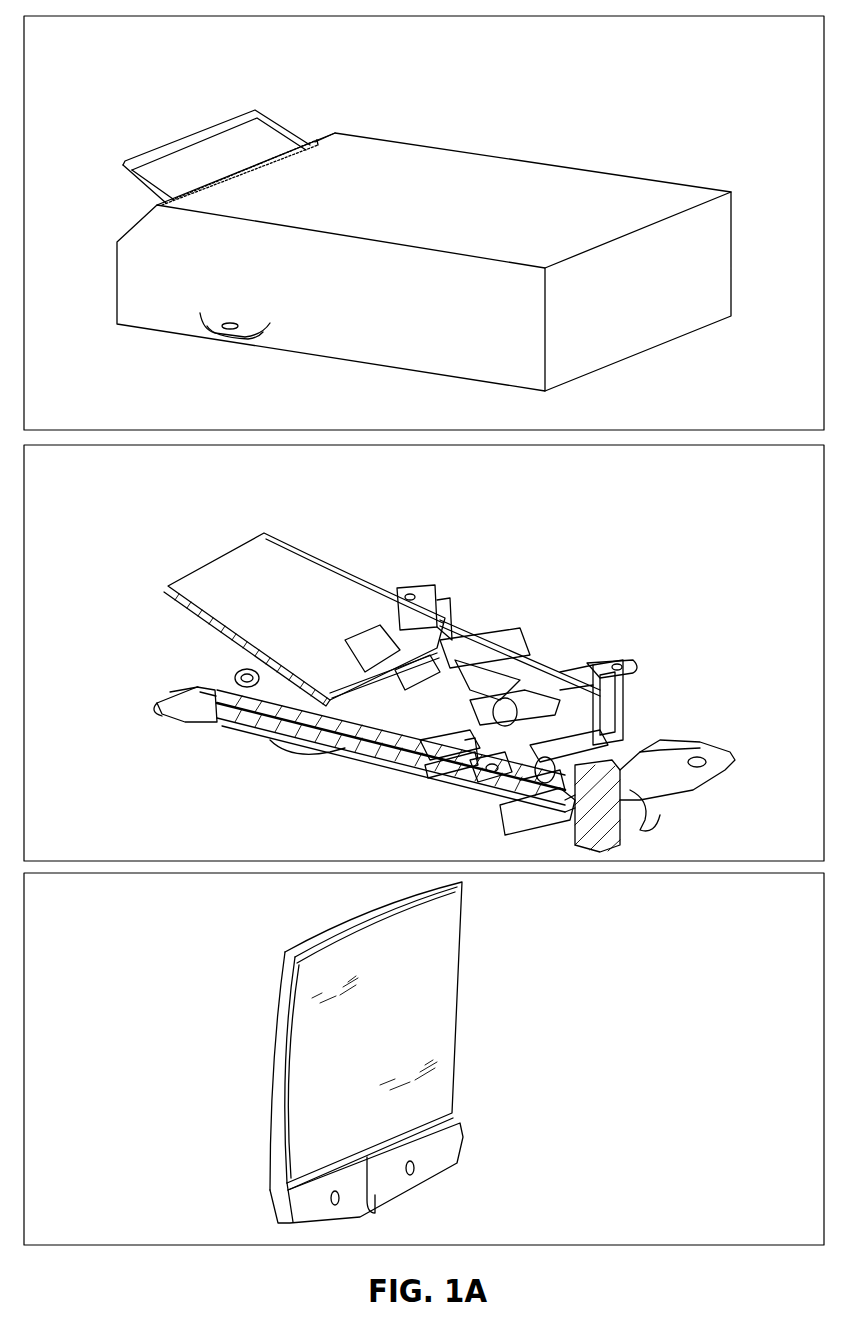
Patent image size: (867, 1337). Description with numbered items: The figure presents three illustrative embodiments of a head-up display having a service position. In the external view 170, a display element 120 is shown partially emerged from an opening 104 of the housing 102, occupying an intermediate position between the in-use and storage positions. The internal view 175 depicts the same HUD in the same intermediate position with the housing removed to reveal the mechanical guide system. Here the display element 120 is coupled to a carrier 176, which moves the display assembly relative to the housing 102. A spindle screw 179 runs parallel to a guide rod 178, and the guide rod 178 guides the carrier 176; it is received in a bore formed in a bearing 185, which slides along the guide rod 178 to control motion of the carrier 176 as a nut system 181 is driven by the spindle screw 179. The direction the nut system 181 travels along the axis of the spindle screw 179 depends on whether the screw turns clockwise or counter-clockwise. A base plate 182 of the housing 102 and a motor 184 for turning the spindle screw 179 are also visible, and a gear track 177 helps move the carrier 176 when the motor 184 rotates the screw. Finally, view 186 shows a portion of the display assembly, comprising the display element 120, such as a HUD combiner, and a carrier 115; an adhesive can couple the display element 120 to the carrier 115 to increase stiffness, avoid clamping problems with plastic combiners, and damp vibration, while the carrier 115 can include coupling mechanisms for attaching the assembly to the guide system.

The housing 102 is at (358, 333).
The opening 104 is at (212, 190).
The display element 120 is at (230, 148).
The external view 170 is at (671, 58).
The internal view 175 is at (673, 488).
The carrier 176 is at (472, 700).
The gear track 177 is at (545, 680).
The guide rod 178 is at (277, 705).
The spindle screw 179 is at (362, 740).
The nut system 181 is at (432, 775).
The base plate 182 is at (475, 785).
The motor 184 is at (605, 830).
The bearing 185 is at (470, 742).
The display assembly view 186 is at (191, 900).
The carrier 115 is at (437, 1163).